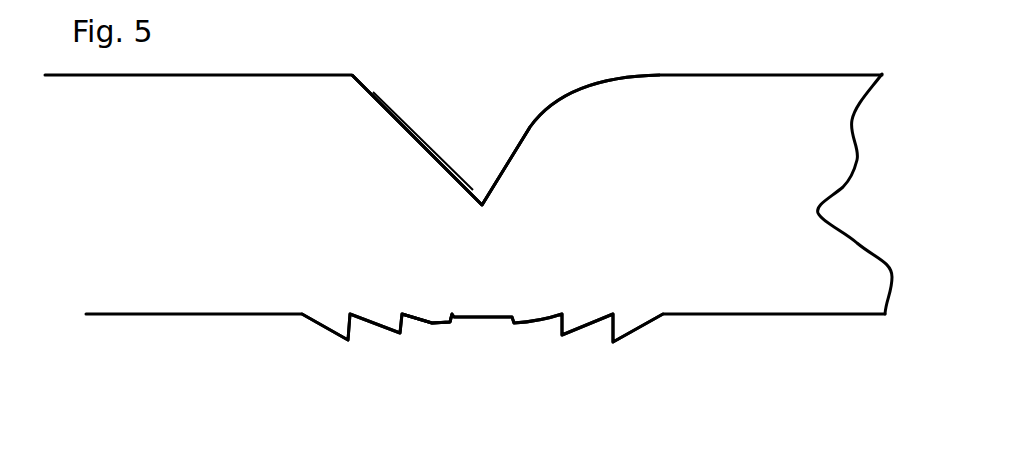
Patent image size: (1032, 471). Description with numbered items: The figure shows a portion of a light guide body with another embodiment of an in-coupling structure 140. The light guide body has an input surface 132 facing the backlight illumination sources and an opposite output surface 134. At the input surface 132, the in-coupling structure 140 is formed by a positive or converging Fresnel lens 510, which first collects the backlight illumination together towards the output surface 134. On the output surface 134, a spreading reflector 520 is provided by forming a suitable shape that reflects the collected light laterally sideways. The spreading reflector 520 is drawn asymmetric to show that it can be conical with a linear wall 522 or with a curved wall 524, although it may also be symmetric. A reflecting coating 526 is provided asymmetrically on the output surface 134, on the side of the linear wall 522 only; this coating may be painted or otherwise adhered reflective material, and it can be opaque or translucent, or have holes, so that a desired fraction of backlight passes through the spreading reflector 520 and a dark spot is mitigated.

The output surface 134 is at (706, 74).
The input surface 132 is at (707, 314).
The in-coupling structure 140 is at (541, 372).
The positive or converging Fresnel lens 510 is at (430, 324).
The spreading reflector 520 is at (477, 197).
The linear wall 522 is at (362, 82).
The reflecting coating 526 is at (410, 124).
The curved wall 524 is at (530, 123).